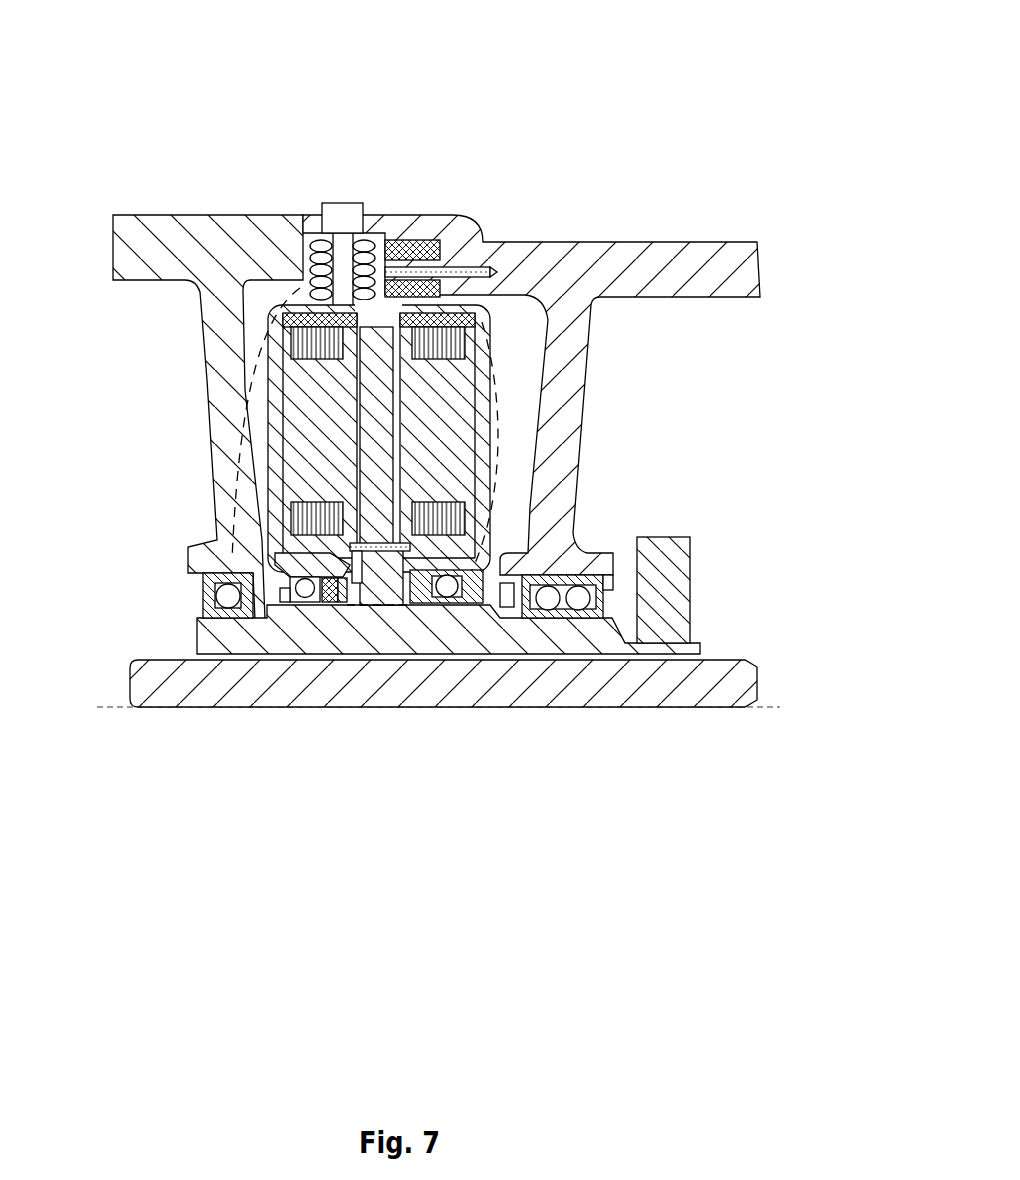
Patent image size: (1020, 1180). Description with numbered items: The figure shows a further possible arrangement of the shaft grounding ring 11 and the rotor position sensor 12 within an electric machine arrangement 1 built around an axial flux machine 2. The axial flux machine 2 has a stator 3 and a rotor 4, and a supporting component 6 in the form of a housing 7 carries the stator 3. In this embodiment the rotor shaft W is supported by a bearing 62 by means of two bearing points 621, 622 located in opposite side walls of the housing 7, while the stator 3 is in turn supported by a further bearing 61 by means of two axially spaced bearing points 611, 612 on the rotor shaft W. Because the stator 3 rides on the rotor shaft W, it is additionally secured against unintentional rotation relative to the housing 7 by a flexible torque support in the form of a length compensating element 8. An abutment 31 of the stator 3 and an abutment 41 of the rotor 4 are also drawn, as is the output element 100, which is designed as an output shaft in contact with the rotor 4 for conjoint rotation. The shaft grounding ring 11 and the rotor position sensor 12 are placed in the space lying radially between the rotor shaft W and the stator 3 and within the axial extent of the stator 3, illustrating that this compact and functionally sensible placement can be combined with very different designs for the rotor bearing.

The electric machine arrangement 1 is at (436, 315).
The axial flux machine 2 is at (283, 278).
The stator 3 is at (457, 308).
The rotor 4 is at (424, 245).
The supporting component 6 is at (436, 381).
The housing 7 is at (595, 258).
The length compensating element 8 is at (386, 320).
The shaft grounding ring 11 is at (411, 626).
The rotor position sensor 12 is at (328, 609).
The abutment 31 is at (298, 575).
The abutment 41 is at (330, 550).
The bearing 61 is at (330, 672).
The first bearing point 611 is at (296, 616).
The second bearing point 612 is at (438, 623).
The bearing point 62 is at (391, 541).
The first bearing point 621 is at (204, 566).
The second bearing point 622 is at (573, 570).
The output element 100 is at (557, 633).
The rotor shaft W is at (470, 633).